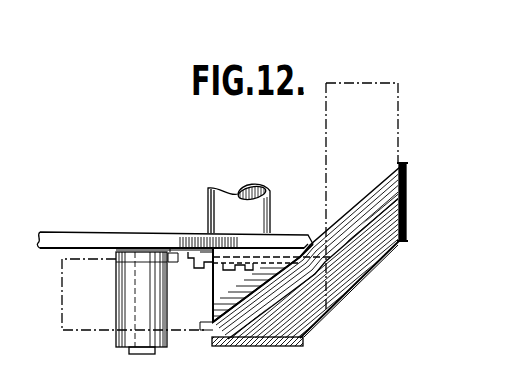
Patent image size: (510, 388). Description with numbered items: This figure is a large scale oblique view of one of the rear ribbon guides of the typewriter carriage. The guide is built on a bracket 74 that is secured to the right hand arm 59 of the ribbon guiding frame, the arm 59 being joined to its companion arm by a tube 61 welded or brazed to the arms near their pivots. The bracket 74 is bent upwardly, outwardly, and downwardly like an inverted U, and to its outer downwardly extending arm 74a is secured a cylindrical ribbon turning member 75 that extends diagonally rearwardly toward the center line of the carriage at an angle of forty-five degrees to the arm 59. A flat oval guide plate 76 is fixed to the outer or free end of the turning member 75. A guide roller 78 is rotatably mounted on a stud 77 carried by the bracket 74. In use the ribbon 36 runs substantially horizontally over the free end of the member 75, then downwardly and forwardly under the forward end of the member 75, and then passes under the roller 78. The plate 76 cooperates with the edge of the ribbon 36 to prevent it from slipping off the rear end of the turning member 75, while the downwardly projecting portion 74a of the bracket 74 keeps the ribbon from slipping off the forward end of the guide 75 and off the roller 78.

The ribbon 36 is at (399, 93).
The arm 59 is at (77, 235).
The tube 61 is at (218, 205).
The bracket 74 is at (178, 258).
The outer downwardly extending arm of the bracket 74a is at (232, 347).
The cylindrical ribbon turning member 75 is at (338, 281).
The flat oval guide plate 76 is at (407, 197).
The stud 77 is at (142, 354).
The guide roller 78 is at (117, 306).